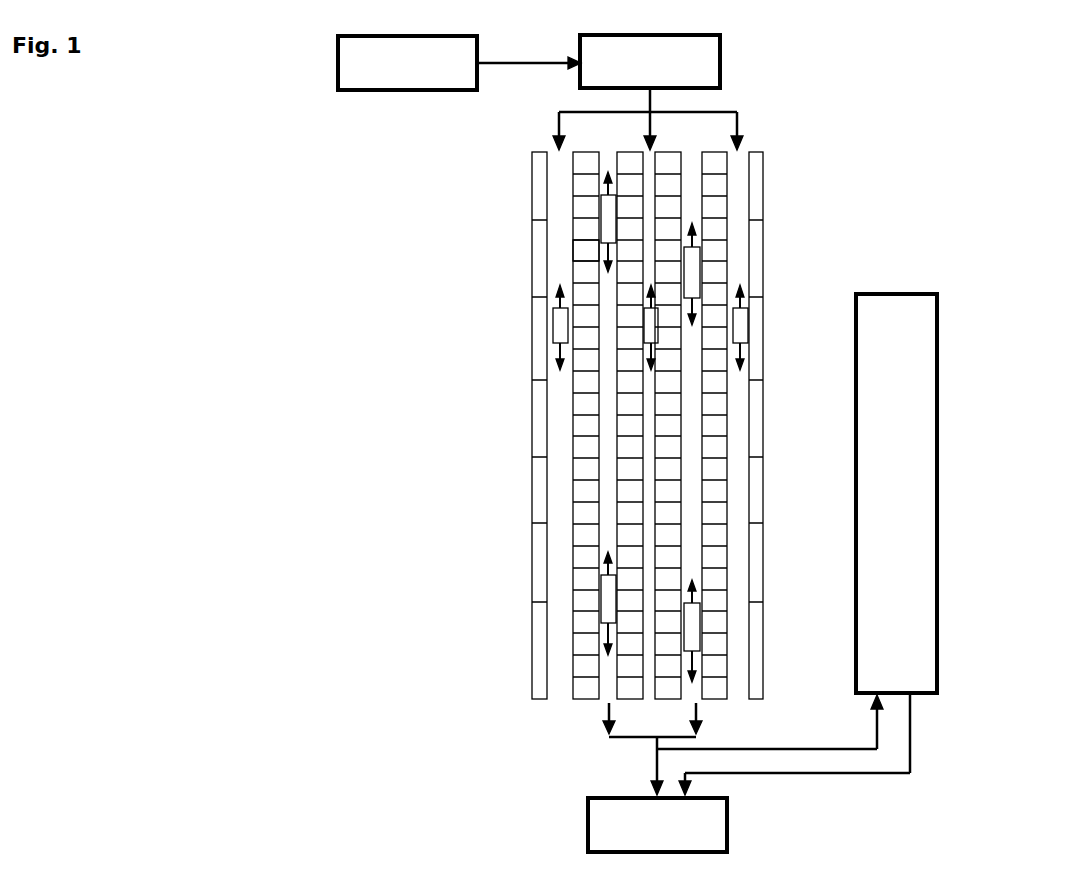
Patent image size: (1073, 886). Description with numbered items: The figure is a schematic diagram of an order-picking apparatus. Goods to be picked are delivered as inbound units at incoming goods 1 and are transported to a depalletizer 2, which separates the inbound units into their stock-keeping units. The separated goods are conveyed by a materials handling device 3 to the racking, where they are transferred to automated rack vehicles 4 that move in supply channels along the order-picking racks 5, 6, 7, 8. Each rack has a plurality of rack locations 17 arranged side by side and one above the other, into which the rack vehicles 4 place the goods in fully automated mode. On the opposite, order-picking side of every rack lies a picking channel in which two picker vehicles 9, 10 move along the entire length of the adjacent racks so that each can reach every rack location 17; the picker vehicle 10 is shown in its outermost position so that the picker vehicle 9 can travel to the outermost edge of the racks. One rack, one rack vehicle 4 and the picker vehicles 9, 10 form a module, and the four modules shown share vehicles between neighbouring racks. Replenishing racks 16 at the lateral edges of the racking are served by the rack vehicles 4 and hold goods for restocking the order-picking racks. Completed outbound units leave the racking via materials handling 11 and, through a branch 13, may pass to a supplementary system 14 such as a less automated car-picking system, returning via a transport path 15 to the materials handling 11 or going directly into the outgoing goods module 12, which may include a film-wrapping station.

The incoming goods 1 is at (395, 73).
The depalletizer 2 is at (653, 71).
The materials handling device 3 is at (650, 102).
The rack vehicle 4 is at (562, 325).
The order-picking rack 5 is at (590, 700).
The order-picking rack 6 is at (632, 699).
The order-picking rack 7 is at (665, 151).
The order-picking rack 8 is at (715, 151).
The picker vehicle 9 is at (608, 228).
The picker vehicle 10 is at (610, 593).
The materials handling 11 is at (625, 738).
The outgoing goods module 12 is at (643, 827).
The branch 13 is at (810, 749).
The supplementary system 14 is at (902, 487).
The transport path 15 is at (841, 773).
The replenishing rack 16 is at (540, 173).
The rack location 17 is at (587, 258).